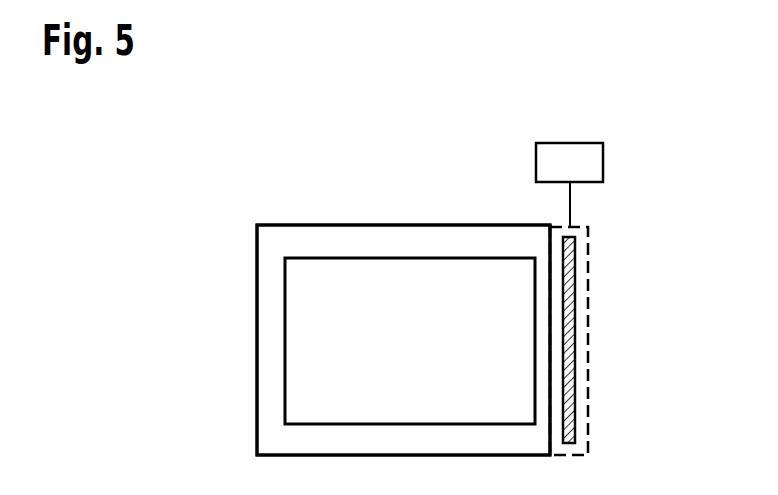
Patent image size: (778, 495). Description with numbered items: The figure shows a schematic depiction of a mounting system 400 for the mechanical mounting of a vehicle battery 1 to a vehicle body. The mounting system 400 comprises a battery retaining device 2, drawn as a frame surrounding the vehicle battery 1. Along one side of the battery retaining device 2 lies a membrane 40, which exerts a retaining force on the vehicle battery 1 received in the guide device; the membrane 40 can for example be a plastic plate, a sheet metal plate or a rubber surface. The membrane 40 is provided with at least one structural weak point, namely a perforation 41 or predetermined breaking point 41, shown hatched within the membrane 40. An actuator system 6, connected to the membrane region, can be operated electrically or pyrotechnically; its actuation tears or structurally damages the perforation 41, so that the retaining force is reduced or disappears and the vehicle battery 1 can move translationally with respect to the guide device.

The mounting system 400 is at (168, 210).
The vehicle battery 1 is at (374, 258).
The battery retaining device 2 is at (439, 225).
The actuator system 6 is at (603, 163).
The membrane 40 is at (588, 355).
The perforation 41 is at (575, 303).